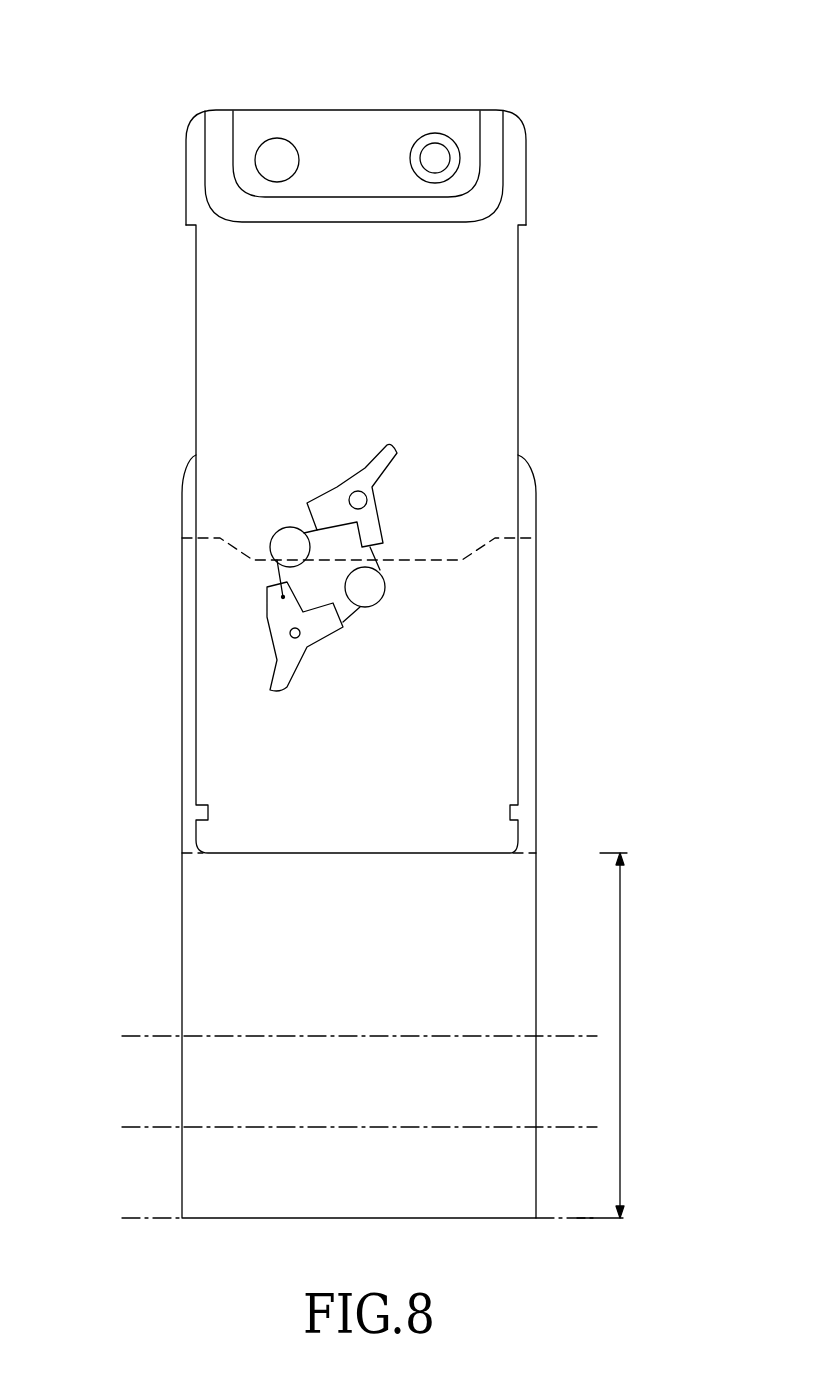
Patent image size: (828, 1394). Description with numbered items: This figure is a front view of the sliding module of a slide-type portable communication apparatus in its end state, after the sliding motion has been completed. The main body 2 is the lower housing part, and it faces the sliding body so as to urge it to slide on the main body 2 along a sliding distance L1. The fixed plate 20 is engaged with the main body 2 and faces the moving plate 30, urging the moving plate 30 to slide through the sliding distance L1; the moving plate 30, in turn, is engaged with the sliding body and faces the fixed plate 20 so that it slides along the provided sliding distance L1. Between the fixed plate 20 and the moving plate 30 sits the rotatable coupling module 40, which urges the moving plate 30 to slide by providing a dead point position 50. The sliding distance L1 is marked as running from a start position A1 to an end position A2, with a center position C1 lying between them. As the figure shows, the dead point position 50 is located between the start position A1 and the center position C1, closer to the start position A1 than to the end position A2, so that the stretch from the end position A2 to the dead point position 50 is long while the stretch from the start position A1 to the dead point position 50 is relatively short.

The main body 2 is at (200, 1178).
The fixed plate 20 is at (198, 853).
The moving plate 30 is at (358, 127).
The rotatable coupling module 40 is at (262, 625).
The dead point position 50 is at (160, 1127).
The center position C1 is at (160, 1036).
The start position A1 is at (623, 1218).
The end position A2 is at (627, 853).
The sliding distance L1 is at (620, 1035).